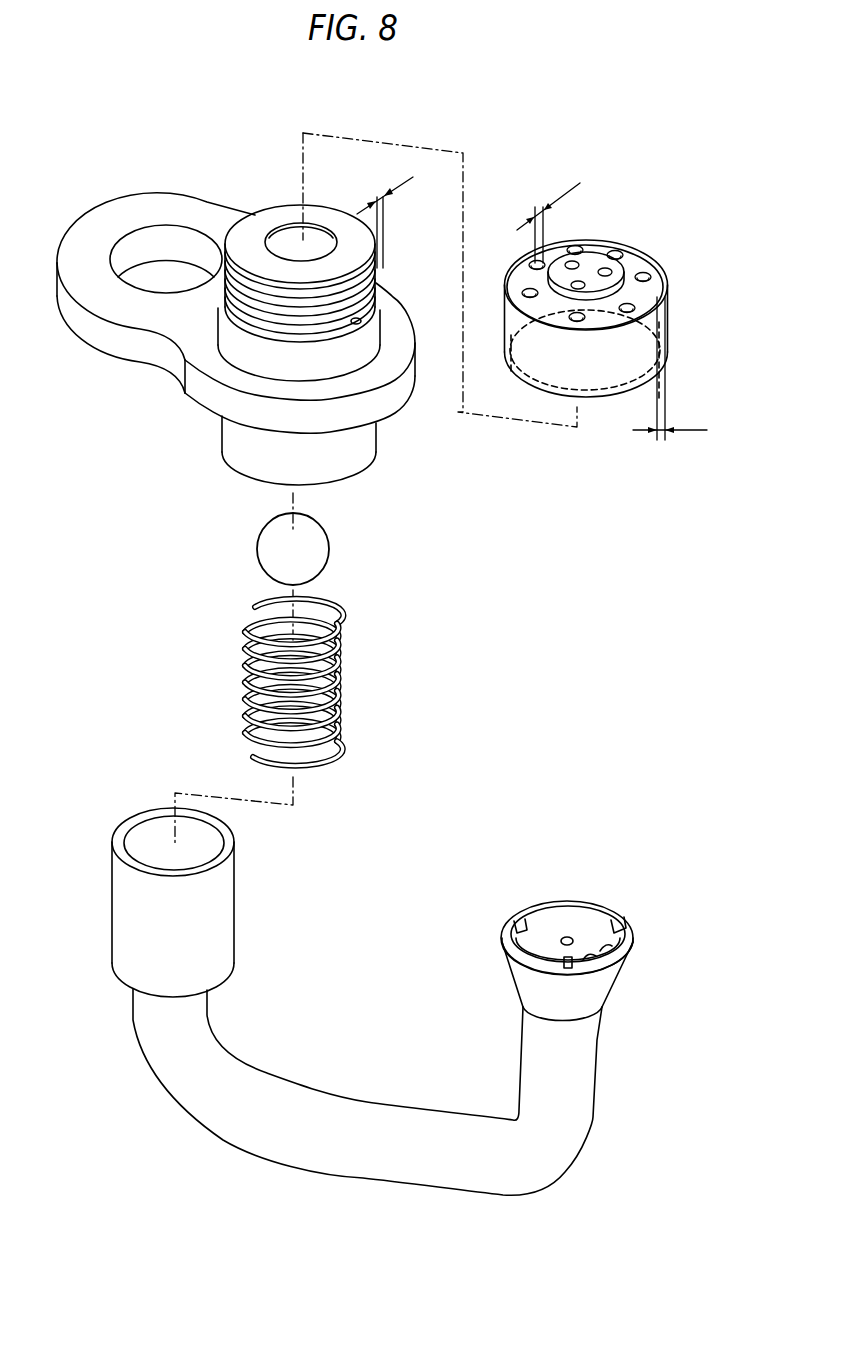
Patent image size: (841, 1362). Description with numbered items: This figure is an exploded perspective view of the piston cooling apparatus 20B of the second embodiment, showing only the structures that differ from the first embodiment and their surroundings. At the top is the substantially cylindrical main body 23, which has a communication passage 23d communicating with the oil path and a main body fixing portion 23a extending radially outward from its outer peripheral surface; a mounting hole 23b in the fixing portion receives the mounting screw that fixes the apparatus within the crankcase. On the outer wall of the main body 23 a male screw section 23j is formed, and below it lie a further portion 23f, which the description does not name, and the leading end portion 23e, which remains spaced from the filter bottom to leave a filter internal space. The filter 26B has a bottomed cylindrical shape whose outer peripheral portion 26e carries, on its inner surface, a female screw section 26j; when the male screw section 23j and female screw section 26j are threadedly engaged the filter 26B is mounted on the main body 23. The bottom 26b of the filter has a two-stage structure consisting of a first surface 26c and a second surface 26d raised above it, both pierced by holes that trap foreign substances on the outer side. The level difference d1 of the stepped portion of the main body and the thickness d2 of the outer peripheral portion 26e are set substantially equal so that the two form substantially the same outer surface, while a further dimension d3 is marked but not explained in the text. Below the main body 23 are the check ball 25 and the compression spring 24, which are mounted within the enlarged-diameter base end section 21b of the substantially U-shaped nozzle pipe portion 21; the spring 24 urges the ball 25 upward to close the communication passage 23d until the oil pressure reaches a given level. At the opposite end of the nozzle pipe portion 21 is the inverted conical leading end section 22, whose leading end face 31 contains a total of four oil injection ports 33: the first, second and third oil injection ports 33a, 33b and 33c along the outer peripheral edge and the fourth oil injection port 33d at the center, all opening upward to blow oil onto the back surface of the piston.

The piston cooling apparatus 20B is at (130, 558).
The nozzle pipe portion 21 is at (380, 1107).
The base end section 21b is at (235, 913).
The leading end section 22 is at (534, 901).
The main body 23 is at (278, 203).
The main body fixing portion 23a is at (123, 212).
The mounting hole 23b is at (173, 243).
The communication passage 23d is at (313, 245).
The leading end portion 23e is at (357, 323).
The cylindrical base portion 23f is at (381, 321).
The male screw section 23j is at (360, 277).
The compression spring 24 is at (337, 660).
The check ball 25 is at (320, 548).
The filter 26B is at (682, 273).
The bottom 26b is at (698, 212).
The first surface 26c is at (637, 263).
The second surface 26d is at (590, 263).
The outer peripheral portion 26e is at (667, 343).
The female screw section 26j is at (640, 343).
The leading end face 31 is at (582, 921).
The oil injection ports 33 is at (705, 900).
The first oil injection port 33a is at (606, 942).
The second oil injection port 33b is at (628, 924).
The third oil injection port 33c is at (588, 955).
The fourth oil injection port 33d is at (573, 938).
The level difference d1 is at (385, 214).
The thickness d2 is at (670, 368).
The dimension d3 is at (548, 216).